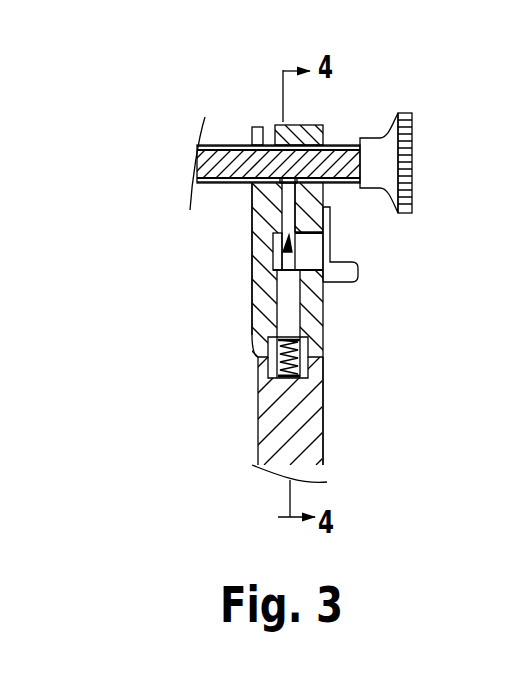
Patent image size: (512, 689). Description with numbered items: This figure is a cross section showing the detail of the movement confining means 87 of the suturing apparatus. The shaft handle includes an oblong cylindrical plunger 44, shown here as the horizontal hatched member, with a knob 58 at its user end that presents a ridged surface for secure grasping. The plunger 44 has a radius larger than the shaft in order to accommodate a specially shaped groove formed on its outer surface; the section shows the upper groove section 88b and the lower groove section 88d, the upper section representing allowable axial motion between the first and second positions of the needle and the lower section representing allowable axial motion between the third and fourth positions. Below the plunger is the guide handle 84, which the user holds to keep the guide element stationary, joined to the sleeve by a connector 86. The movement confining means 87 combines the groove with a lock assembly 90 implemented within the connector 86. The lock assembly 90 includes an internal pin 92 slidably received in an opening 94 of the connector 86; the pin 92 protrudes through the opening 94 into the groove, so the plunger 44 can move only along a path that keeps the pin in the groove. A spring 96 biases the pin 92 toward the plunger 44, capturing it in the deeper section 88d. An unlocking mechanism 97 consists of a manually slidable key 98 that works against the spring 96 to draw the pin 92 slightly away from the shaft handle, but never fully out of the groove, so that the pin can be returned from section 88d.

The plunger 44 is at (340, 167).
The knob 58 is at (380, 148).
The guide handle 84 is at (257, 410).
The connector 86 is at (318, 308).
The movement confining means 87 is at (152, 278).
The groove section 88b is at (222, 140).
The groove section 88d is at (207, 188).
The lock assembly 90 is at (403, 378).
The pin 92 is at (283, 202).
The opening 94 is at (278, 260).
The spring 96 is at (300, 378).
The unlocking mechanism 97 is at (380, 250).
The key 98 is at (348, 278).